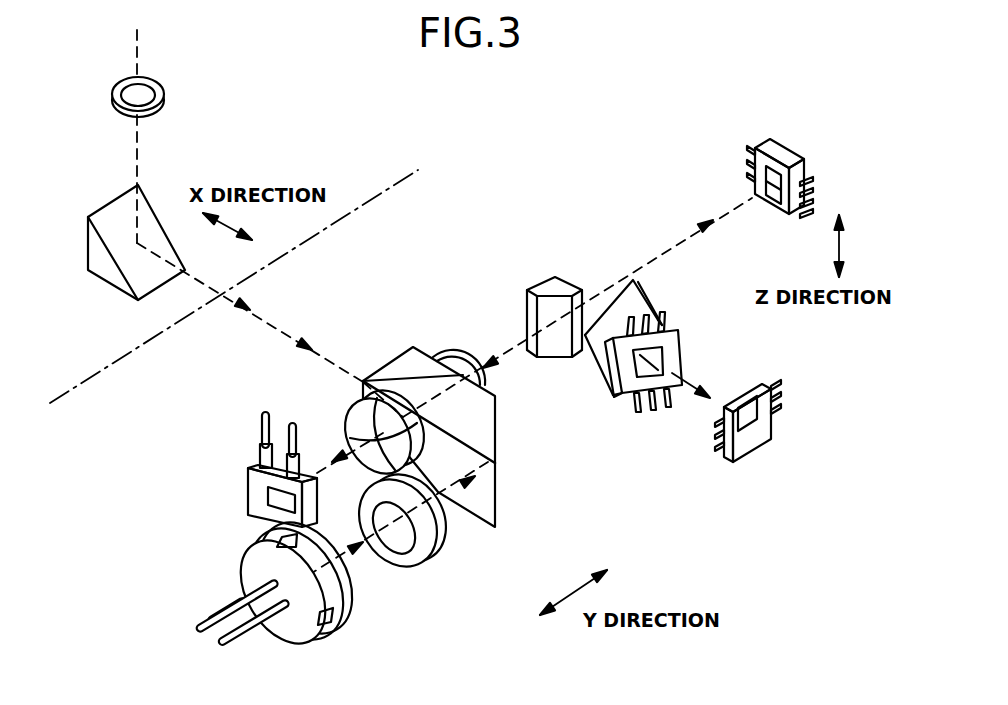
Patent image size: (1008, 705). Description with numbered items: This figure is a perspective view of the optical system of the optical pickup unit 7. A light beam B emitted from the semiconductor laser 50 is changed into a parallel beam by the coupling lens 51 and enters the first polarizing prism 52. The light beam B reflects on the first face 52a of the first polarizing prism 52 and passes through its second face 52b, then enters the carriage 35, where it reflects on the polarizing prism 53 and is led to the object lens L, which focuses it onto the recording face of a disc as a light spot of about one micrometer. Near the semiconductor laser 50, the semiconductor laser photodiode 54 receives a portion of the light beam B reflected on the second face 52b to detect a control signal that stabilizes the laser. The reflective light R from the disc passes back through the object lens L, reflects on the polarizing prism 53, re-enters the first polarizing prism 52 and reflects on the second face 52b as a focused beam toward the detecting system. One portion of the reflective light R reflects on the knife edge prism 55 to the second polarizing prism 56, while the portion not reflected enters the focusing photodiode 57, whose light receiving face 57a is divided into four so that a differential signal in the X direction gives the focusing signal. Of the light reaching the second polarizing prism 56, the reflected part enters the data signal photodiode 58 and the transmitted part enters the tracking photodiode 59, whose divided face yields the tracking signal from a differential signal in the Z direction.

The optical pickup unit 7 is at (465, 203).
The carriage 35 is at (58, 392).
The semiconductor laser 50 is at (342, 606).
The coupling lens 51 is at (446, 550).
The first polarizing prism 52 is at (482, 486).
The first face of the first polarizing prism 52a is at (497, 433).
The second face of the first polarizing prism 52b is at (400, 377).
The polarizing prism 53 is at (153, 236).
The semiconductor laser photodiode 54 is at (247, 493).
The knife edge prism 55 is at (555, 277).
The second polarizing prism 56 is at (607, 355).
The focusing photodiode 57 is at (739, 205).
The light receiving face of the focusing photodiode 57a is at (775, 196).
The data signal photodiode 58 is at (672, 347).
The tracking photodiode 59 is at (760, 413).
The object lens L is at (152, 97).
The light beam B is at (263, 322).
The reflective light R is at (297, 343).